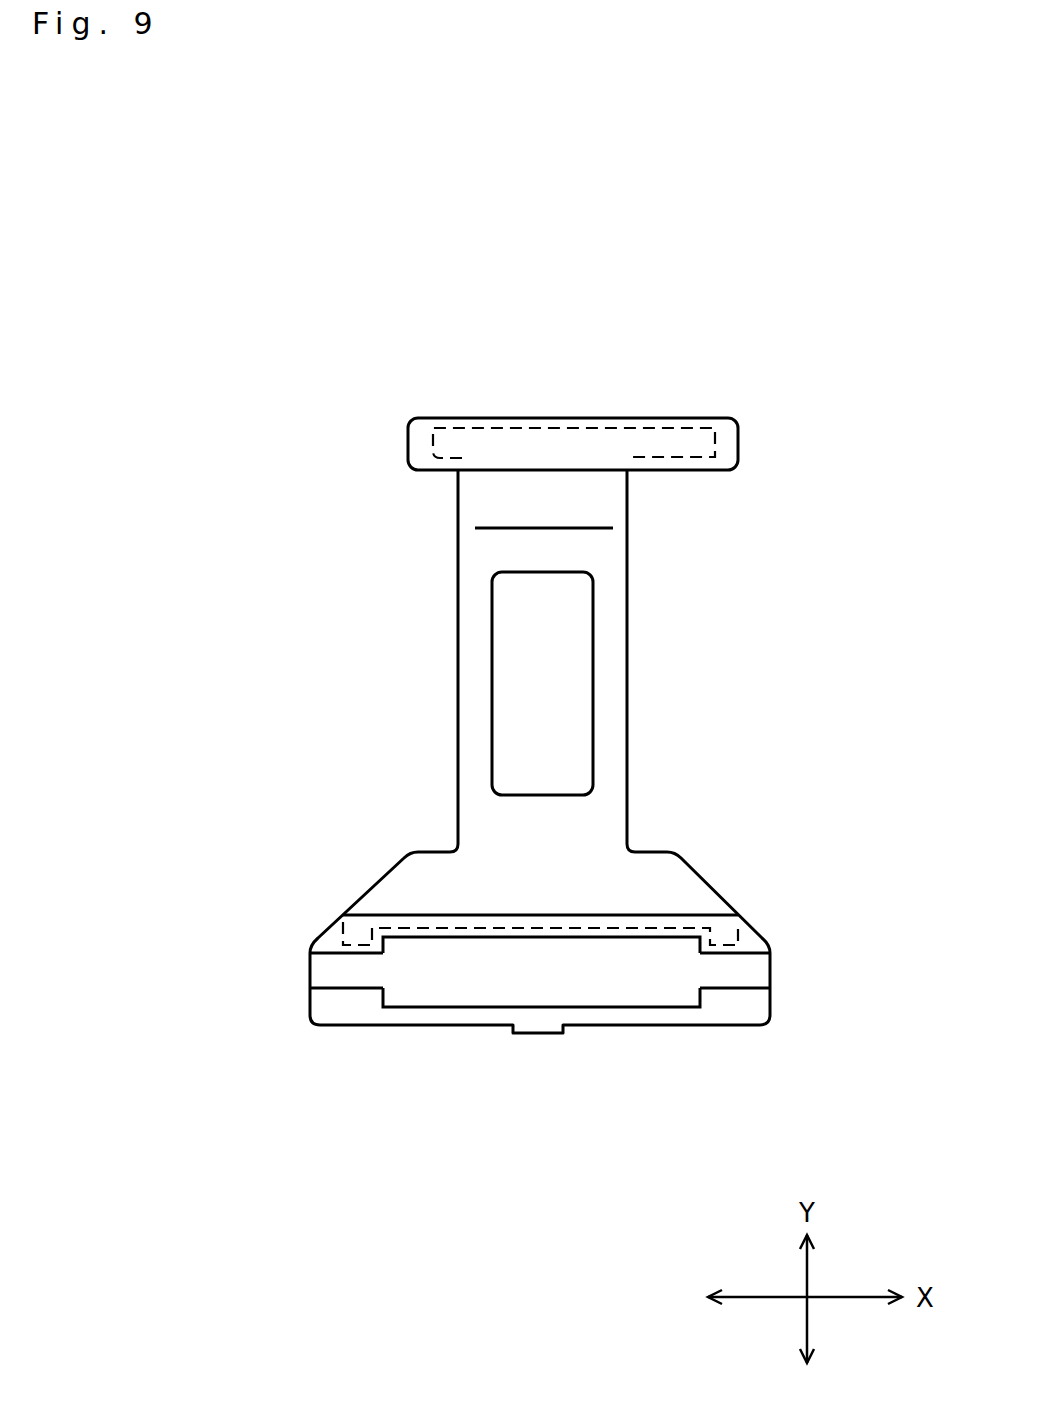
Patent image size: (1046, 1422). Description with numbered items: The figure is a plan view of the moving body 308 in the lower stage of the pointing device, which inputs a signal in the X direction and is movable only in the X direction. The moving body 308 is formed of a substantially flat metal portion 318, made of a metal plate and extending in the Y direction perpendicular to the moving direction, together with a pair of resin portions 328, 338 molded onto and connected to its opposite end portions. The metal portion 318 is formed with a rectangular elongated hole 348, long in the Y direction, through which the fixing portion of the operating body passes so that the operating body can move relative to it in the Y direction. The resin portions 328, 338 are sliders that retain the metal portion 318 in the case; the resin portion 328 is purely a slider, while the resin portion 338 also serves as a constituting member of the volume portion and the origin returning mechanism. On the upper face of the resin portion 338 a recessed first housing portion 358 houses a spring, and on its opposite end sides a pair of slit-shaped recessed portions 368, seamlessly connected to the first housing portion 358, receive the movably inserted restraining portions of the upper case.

The moving body in a lower stage 308 is at (548, 390).
The metal portion 318 is at (628, 592).
The resin portion 328 is at (682, 420).
The resin portion 338 is at (447, 1028).
The rectangular elongated hole 348 is at (510, 683).
The first housing portion 358 is at (637, 987).
The recessed portions 368 is at (340, 980).